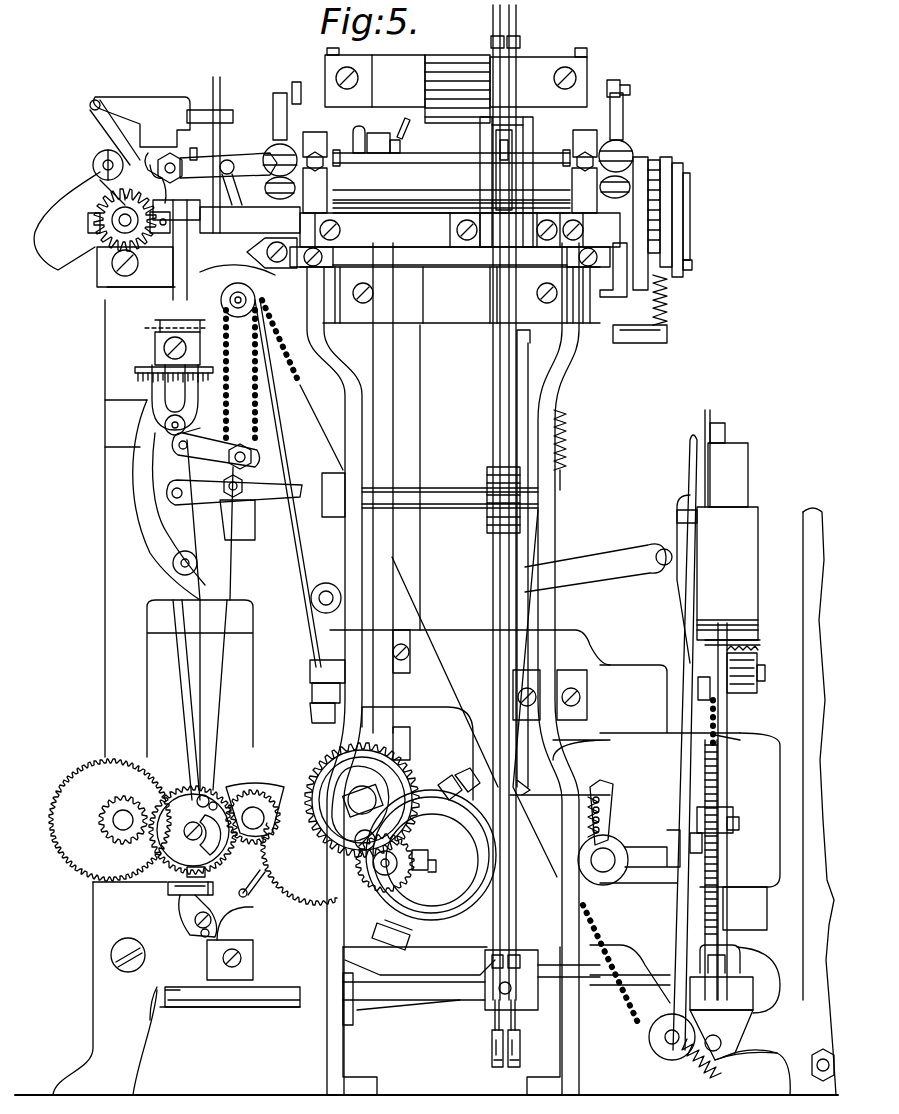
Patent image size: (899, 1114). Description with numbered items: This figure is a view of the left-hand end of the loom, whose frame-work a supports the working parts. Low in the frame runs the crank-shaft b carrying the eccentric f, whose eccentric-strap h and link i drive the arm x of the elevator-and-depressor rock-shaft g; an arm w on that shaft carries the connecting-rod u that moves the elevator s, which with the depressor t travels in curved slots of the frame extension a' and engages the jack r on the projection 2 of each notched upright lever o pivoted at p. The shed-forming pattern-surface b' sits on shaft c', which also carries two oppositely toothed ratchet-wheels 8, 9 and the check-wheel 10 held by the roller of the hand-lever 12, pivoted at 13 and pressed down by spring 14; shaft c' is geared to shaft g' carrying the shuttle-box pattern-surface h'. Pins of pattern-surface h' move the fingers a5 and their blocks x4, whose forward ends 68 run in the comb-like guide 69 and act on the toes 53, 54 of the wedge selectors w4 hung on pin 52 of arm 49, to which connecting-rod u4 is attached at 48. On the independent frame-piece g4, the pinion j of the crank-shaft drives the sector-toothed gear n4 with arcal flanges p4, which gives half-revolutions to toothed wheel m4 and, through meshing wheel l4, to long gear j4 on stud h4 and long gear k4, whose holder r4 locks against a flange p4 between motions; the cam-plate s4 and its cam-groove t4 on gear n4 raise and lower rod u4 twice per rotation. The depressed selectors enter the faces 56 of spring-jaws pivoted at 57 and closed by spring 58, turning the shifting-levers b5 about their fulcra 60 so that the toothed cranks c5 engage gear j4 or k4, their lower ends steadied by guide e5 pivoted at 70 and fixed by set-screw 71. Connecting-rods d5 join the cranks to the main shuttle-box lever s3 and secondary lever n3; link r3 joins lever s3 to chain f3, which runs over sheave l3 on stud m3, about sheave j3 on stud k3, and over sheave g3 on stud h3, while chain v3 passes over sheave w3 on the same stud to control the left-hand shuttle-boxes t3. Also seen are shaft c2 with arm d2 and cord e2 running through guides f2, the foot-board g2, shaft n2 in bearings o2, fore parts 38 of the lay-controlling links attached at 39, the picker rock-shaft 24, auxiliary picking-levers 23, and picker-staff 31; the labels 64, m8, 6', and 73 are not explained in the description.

The notched upright levers o is at (495, 32).
The projection 2 is at (488, 118).
The bearing blocks 64 is at (312, 134).
The arm x is at (358, 128).
The elevator and depressor rock-shaft g is at (404, 123).
The elevator s is at (445, 160).
The depressor t is at (451, 188).
The jack r is at (495, 186).
The extension of the frame-work a' is at (450, 182).
The shed-forming pattern-surface b' is at (410, 227).
The ratchet-wheel 8 is at (608, 226).
The shaft c' is at (259, 250).
The connecting-rod u is at (276, 114).
The arm w is at (620, 68).
The blocks x4 is at (140, 131).
The comb-like guide 69 is at (214, 84).
The forward ends of the blocks 68 is at (228, 112).
The pattern-surface h' is at (98, 177).
The shaft g' is at (70, 185).
The fingers a5 is at (67, 221).
The toe 53 is at (148, 157).
The long pin 52 is at (162, 178).
The toe 54 is at (193, 152).
The arm 49 is at (228, 165).
The attachment point 48 is at (227, 160).
The reciprocating wedges w4 is at (168, 303).
The sheave l3 is at (228, 290).
The stud m3 is at (222, 300).
The faces of the spring-jaws 56 is at (195, 357).
The spring 58 is at (130, 378).
The pivot 57 is at (150, 423).
The shifting-levers b5 is at (140, 502).
The fulcra 60 is at (176, 572).
The secondary shuttle-box lever n3 is at (215, 451).
The link r3 is at (197, 425).
The main shuttle-box lever s3 is at (234, 488).
The block m8 is at (252, 500).
The connecting-rod d5 is at (220, 675).
The chain f3 is at (752, 720).
The connecting-rod u4 is at (304, 542).
The shaft n2 is at (326, 598).
The bearings o2 is at (338, 620).
The link i is at (391, 501).
The pivot p is at (430, 499).
The cord or wire e2 is at (566, 415).
The connection point 39 is at (662, 548).
The fore parts of the lay-controlling links 38 is at (178, 1026).
The series of shuttle-boxes t3 is at (727, 525).
The frame-work a is at (665, 749).
The picker-staff 31 is at (682, 750).
The sheave w3 is at (698, 688).
The chain v3 is at (706, 716).
The forward sheave g3 is at (752, 662).
The stud h3 is at (747, 667).
The arm d2 is at (610, 800).
The shaft c2 is at (620, 852).
The sheave j3 is at (648, 1040).
The stud k3 is at (683, 1050).
The foot-board g2 is at (757, 880).
The toothed wheel l4 is at (70, 780).
The stud h4 is at (100, 820).
The toothed gear j4 is at (108, 835).
The toothed cranks c5 is at (160, 832).
The pawl 6' is at (180, 812).
The holder r4 is at (253, 816).
The cam-groove t4 is at (284, 815).
The toothed wheel m4 is at (290, 755).
The long gear k4 is at (266, 850).
The gear n4 is at (308, 890).
The cam-plate s4 is at (402, 760).
The arcal flanges p4 is at (395, 830).
The eccentric f is at (460, 880).
The guides f2 is at (492, 784).
The pinion j is at (416, 878).
The eccentric-strap h is at (463, 923).
The crank-shaft b is at (383, 927).
The picker rock-shaft 24 is at (415, 986).
The auxiliary picking-levers 23 is at (408, 1008).
The guide e5 is at (170, 893).
The bracket 73 is at (200, 875).
The set-screw 71 is at (200, 925).
The pivot 70 is at (250, 897).
The hand-lever 12 is at (680, 197).
The ratchet-wheel 9 is at (672, 220).
The check-wheel 10 is at (685, 240).
The pivot 13 is at (688, 265).
The spring 14 is at (668, 300).
The independent frame-piece g4 is at (105, 598).